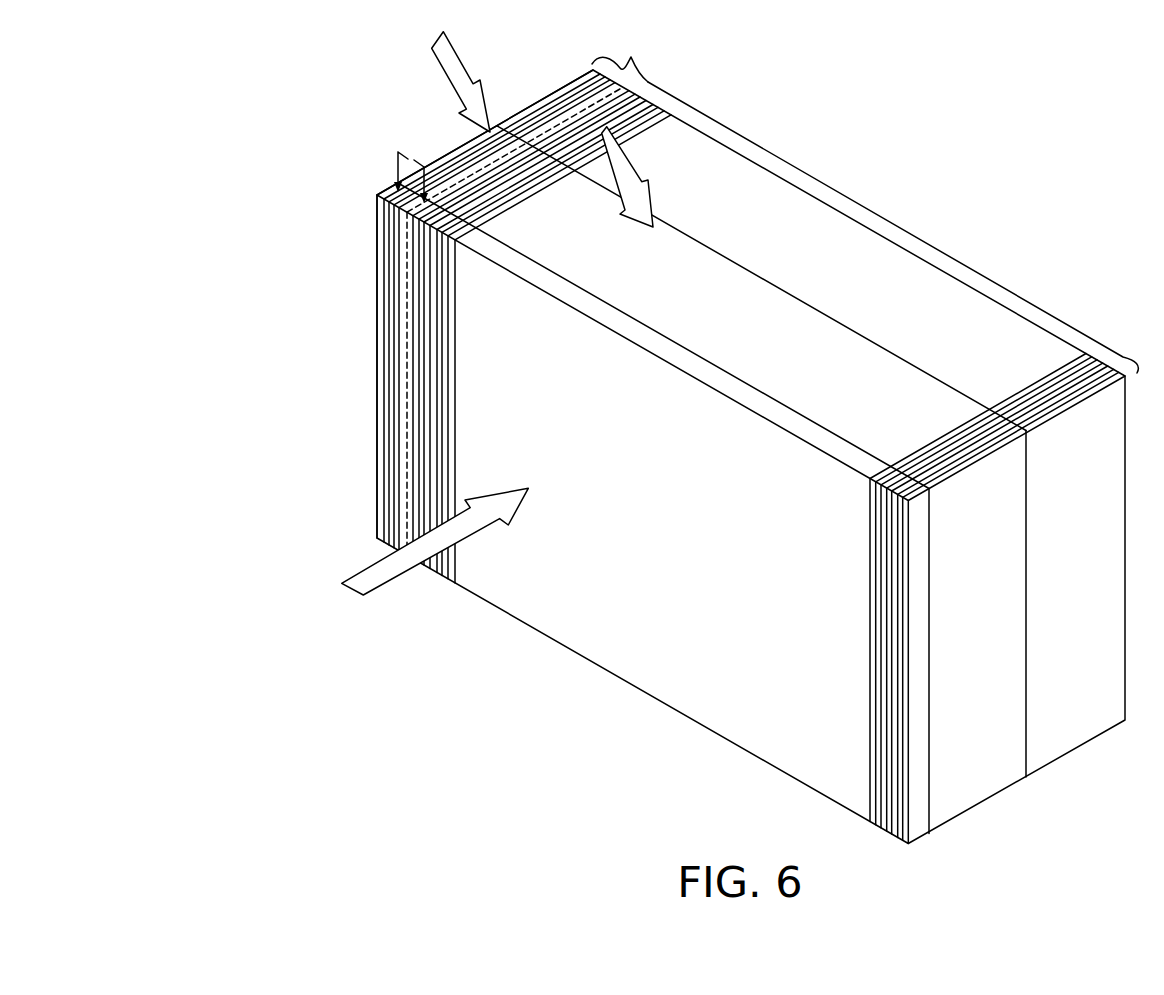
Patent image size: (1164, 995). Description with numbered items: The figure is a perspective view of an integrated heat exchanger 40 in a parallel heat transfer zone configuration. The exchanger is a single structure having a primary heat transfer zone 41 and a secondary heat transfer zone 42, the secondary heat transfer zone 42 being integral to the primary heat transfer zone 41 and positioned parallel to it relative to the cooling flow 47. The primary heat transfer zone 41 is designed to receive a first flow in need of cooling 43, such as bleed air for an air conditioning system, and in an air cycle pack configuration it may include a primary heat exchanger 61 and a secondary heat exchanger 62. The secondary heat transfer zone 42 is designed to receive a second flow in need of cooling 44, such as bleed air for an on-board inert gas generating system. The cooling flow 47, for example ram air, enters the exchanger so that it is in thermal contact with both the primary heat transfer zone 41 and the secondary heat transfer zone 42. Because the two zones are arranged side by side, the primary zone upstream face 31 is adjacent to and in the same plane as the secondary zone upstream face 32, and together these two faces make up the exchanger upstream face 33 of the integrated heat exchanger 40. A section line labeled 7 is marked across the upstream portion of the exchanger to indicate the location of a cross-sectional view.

The integrated heat exchanger 40 is at (258, 107).
The primary heat transfer zone 41 is at (896, 222).
The secondary heat transfer zone 42 is at (635, 57).
The first flow in need of cooling 43 is at (628, 160).
The second flow in need of cooling 44 is at (462, 63).
The cooling flow 47 is at (395, 578).
The primary heat exchanger 61 is at (779, 256).
The secondary heat exchanger 62 is at (699, 320).
The primary zone upstream face 31 is at (472, 380).
The secondary zone upstream face 32 is at (392, 432).
The exchanger upstream face 33 is at (451, 326).
The section line 7- 7 is at (415, 160).